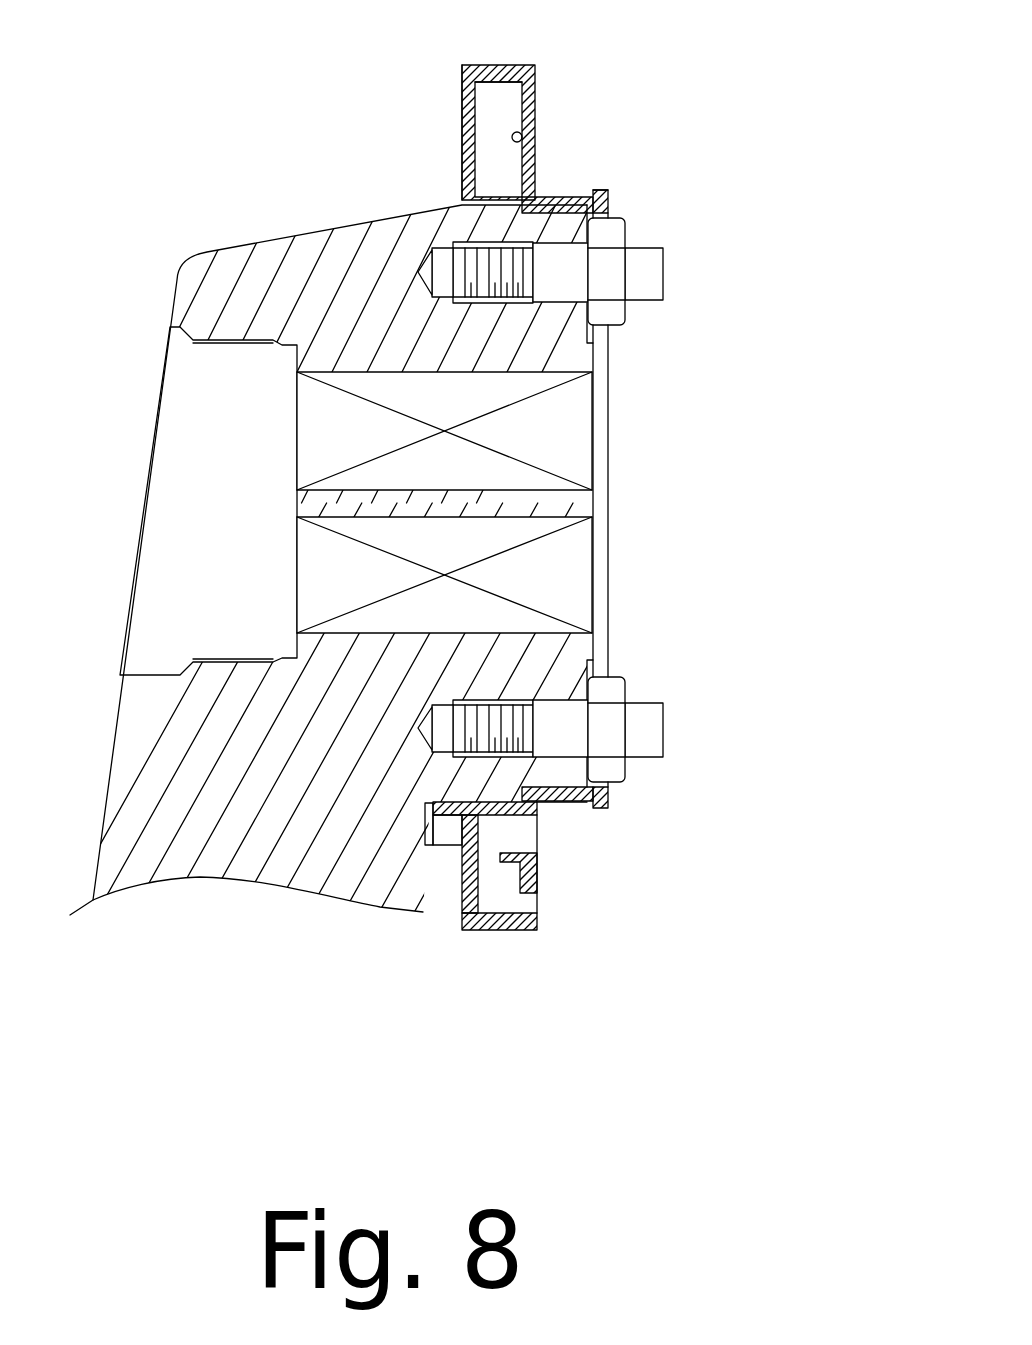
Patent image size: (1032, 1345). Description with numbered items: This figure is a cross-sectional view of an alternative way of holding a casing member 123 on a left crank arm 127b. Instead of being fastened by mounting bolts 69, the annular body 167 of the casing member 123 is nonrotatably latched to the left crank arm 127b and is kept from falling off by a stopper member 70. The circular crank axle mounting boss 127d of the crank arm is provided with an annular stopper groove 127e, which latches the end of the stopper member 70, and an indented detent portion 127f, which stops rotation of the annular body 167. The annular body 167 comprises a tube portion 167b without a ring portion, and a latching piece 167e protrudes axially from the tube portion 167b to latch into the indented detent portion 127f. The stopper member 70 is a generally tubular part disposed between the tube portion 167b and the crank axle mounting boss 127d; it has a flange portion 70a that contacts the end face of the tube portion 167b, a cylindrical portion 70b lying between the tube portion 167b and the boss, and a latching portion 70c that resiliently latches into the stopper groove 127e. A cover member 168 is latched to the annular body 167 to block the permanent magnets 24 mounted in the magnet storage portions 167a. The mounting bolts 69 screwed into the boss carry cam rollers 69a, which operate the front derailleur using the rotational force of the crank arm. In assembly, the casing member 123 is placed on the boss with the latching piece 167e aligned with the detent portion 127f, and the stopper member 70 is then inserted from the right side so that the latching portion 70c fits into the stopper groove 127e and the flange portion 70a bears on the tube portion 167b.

The permanent magnets 24 is at (490, 122).
The mounting bolts 69 is at (652, 272).
The cam rollers 69a is at (665, 293).
The stopper member 70 is at (516, 500).
The flange portion 70a is at (611, 205).
The cylindrical portion 70b is at (533, 790).
The latching portion 70c is at (528, 213).
The casing member 123 is at (516, 527).
The left crank arm 127b is at (275, 277).
The crank axle mounting boss 127d is at (573, 803).
The annular stopper groove 127e is at (540, 803).
The indented detent portion 127f is at (432, 820).
The annular body 167 is at (516, 478).
The magnet storage portions 167a is at (522, 196).
The tube portion 167b is at (603, 190).
The latching piece 167e is at (432, 795).
The cover member 168 is at (470, 147).